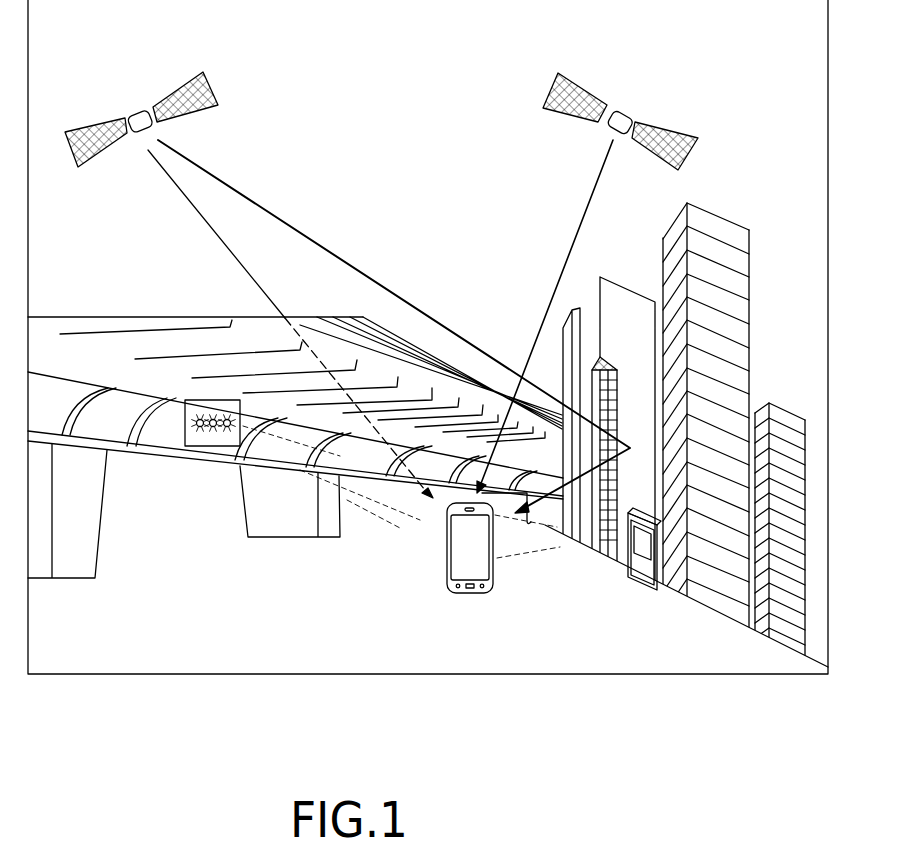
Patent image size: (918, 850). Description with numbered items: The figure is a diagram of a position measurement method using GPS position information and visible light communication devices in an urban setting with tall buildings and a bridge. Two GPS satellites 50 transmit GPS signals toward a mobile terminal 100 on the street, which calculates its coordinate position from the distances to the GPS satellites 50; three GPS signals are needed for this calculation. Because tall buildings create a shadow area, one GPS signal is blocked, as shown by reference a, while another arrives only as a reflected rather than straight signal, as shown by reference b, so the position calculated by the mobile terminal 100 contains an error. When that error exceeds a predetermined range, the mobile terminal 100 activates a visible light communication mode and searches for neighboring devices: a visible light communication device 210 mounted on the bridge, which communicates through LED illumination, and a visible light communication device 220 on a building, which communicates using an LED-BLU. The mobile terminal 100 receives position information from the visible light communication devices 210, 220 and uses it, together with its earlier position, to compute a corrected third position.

The GPS satellite 50 is at (608, 72).
The mobile terminal 100 is at (470, 594).
The visible light communication device 210 is at (214, 446).
The visible light communication device 220 is at (640, 590).
The blocked GPS signal a is at (259, 284).
The reflected GPS signal b is at (392, 291).